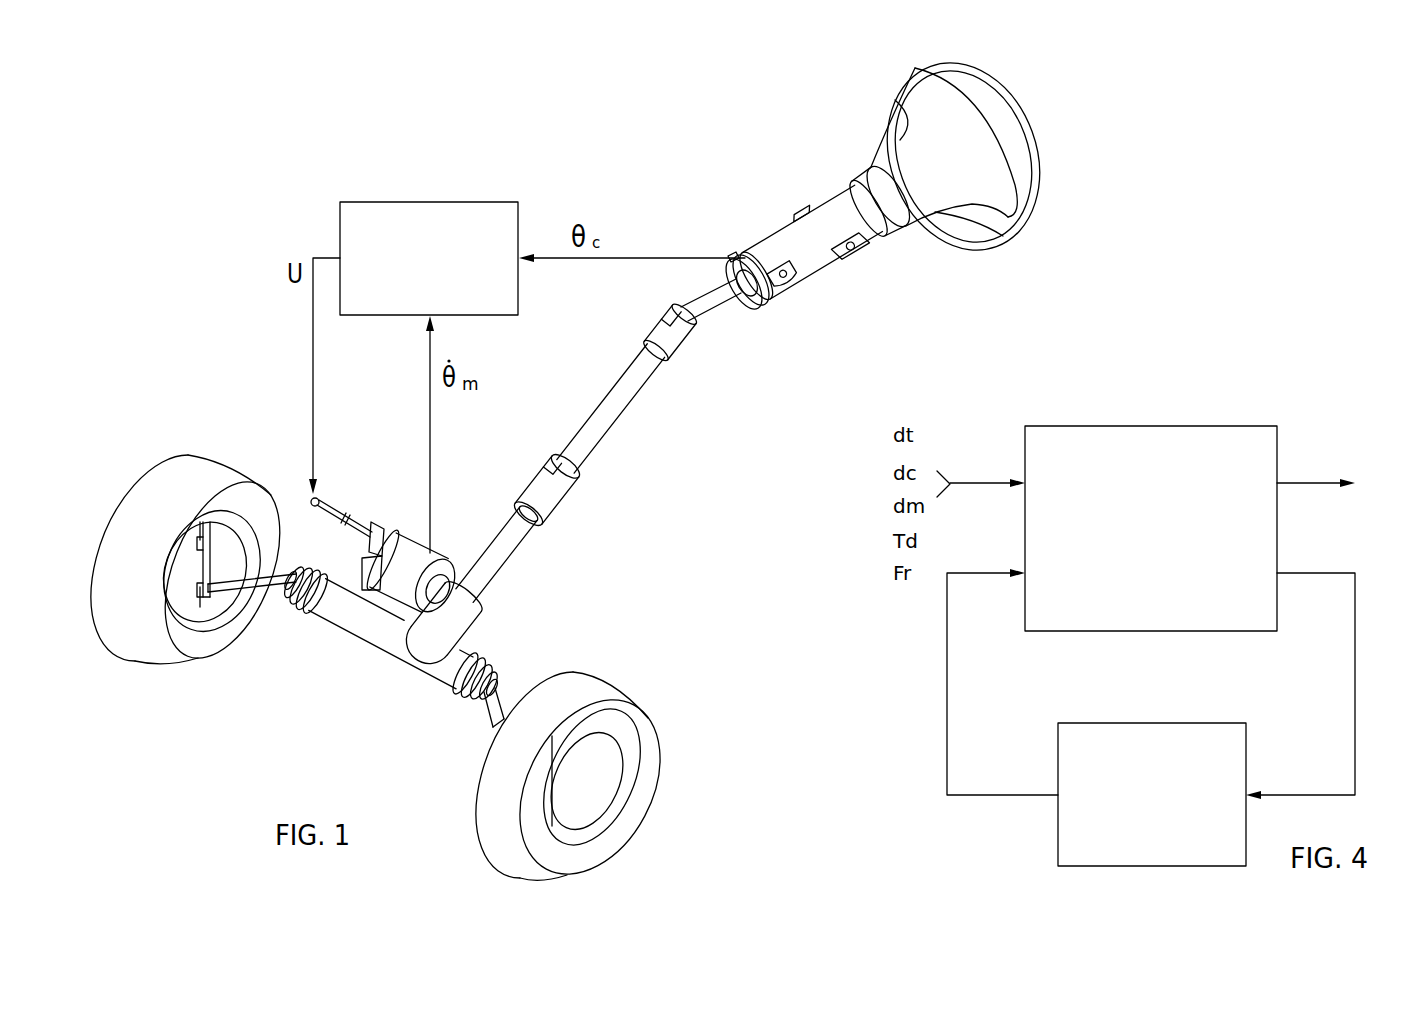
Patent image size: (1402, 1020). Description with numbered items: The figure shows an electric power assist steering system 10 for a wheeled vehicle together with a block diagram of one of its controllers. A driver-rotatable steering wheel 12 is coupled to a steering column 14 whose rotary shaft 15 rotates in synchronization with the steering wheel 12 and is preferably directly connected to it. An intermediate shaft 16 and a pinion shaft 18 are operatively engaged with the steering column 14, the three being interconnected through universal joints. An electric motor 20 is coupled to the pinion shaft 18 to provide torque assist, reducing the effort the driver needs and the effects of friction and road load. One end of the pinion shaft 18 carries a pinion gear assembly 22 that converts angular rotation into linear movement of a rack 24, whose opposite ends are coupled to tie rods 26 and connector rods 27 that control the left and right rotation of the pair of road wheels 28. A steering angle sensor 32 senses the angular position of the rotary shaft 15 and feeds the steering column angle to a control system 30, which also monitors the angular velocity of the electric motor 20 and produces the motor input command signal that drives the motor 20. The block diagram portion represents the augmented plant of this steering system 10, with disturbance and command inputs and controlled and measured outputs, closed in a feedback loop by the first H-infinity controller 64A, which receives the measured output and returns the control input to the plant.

In FIG. 1, the electric power assist steering system 10 is at (243, 150).
In FIG. 4, the electric power assist steering system 10 is at (1227, 423).
In FIG. 1, the steering wheel 12 is at (1047, 183).
In FIG. 1, the steering column 14 is at (808, 268).
In FIG. 1, the rotary shaft 15 is at (700, 314).
In FIG. 1, the intermediate shaft 16 is at (625, 403).
In FIG. 1, the pinion shaft 18 is at (513, 517).
In FIG. 1, the electric motor 20 is at (430, 548).
In FIG. 1, the pinion gear assembly 22 is at (410, 653).
In FIG. 1, the rack 24 is at (350, 623).
In FIG. 1, the tie rods 26 is at (293, 606).
In FIG. 1, the connector rods 27 is at (250, 620).
In FIG. 1, the road wheels 28 is at (217, 458).
In FIG. 1, the control system 30 is at (488, 202).
In FIG. 1, the steering angle sensor 32 is at (752, 313).
In FIG. 4, the first H-infinity controller 64A is at (1192, 722).